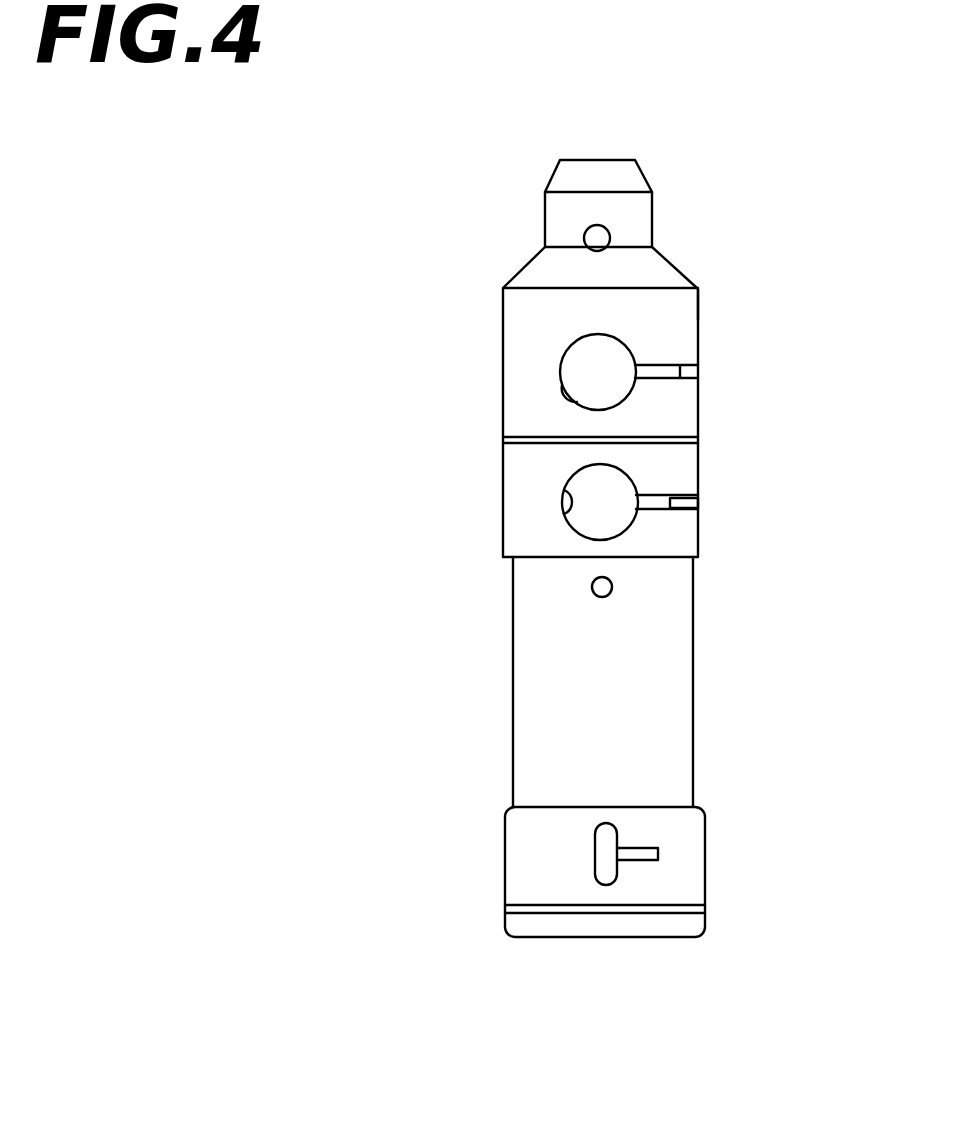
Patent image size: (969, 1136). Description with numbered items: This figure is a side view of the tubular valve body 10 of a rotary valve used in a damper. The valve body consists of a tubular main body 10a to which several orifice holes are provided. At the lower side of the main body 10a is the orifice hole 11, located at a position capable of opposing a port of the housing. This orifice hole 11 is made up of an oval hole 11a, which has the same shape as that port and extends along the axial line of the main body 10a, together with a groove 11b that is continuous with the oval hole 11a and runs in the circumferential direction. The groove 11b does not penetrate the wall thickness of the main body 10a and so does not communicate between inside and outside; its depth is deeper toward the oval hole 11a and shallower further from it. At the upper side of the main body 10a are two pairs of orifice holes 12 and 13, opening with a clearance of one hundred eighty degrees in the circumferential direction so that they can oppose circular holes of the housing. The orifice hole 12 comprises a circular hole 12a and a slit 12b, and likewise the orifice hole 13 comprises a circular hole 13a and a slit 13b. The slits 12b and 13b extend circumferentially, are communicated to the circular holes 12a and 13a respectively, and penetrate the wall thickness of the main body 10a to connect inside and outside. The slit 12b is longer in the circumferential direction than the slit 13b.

The tubular valve body 10 is at (503, 288).
The tubular main body 10a is at (698, 312).
The orifice hole 11 is at (592, 852).
The oval hole 11a is at (607, 885).
The groove 11b is at (640, 848).
The orifice hole 12 is at (564, 357).
The circular hole 12a is at (578, 400).
The slit 12b is at (700, 340).
The orifice hole 13 is at (580, 542).
The circular hole 13a is at (568, 518).
The slit 13b is at (657, 495).